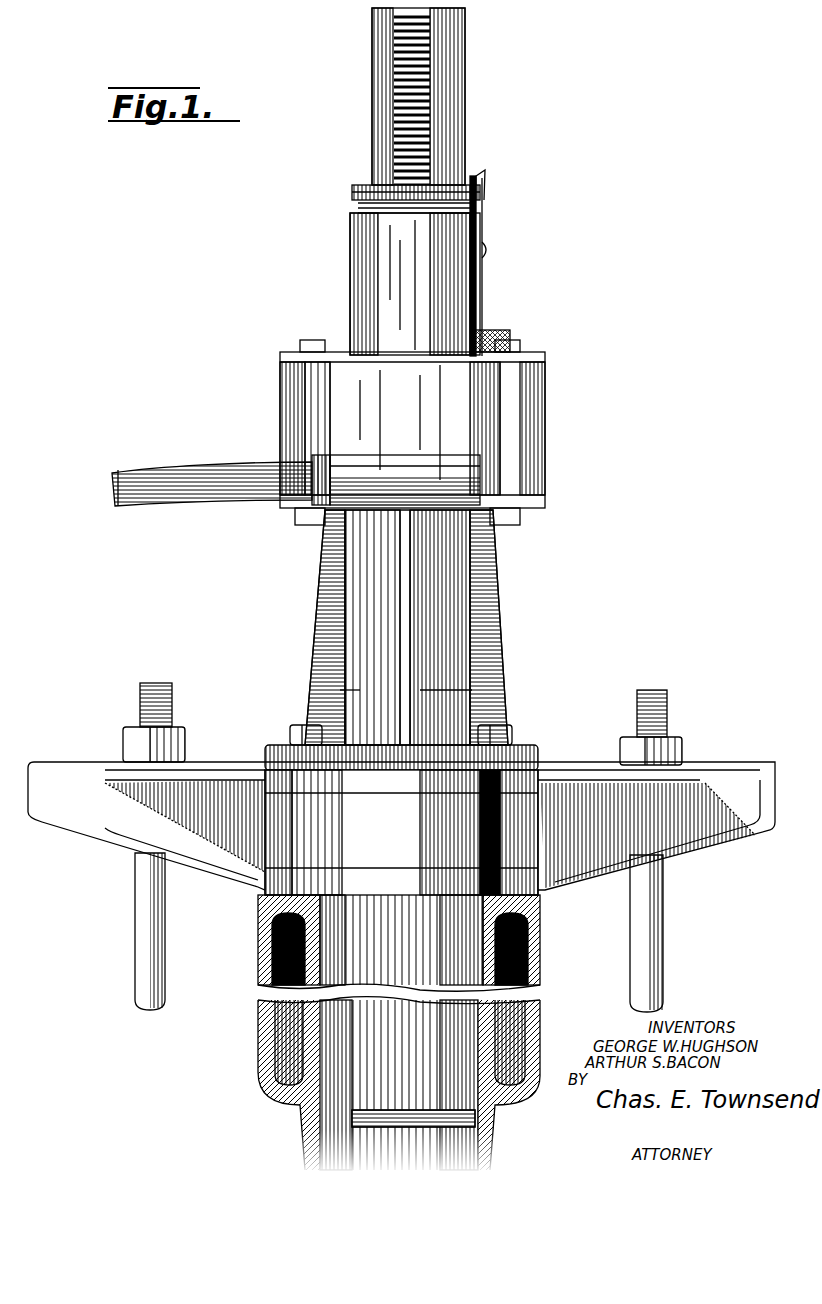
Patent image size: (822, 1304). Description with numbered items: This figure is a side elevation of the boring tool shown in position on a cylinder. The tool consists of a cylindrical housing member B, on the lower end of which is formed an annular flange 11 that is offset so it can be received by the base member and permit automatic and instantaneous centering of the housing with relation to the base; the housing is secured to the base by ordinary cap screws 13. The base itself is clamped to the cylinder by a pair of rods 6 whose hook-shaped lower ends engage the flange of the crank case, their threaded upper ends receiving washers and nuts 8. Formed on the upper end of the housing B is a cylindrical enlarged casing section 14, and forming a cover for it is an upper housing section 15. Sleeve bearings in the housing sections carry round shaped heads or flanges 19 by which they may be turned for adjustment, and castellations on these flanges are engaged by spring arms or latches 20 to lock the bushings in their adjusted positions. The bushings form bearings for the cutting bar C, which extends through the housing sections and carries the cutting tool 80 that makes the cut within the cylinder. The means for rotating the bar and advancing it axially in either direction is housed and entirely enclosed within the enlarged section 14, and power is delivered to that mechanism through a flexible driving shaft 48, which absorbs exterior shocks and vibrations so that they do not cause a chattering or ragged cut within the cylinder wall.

The cutting bar C is at (465, 118).
The round shaped heads or flanges 19 is at (463, 190).
The spring arms or latches 20 is at (484, 216).
The upper housing section 15 is at (350, 282).
The cylindrical enlarged casing section 14 is at (295, 432).
The flexible driving shaft 48 is at (187, 470).
The cylindrical housing member B is at (485, 585).
The annular flange 11 is at (290, 742).
The cap screws 13 is at (500, 740).
The washers and nuts 8 is at (682, 745).
The rods 6 is at (143, 915).
The cutting tool 80 is at (478, 1125).